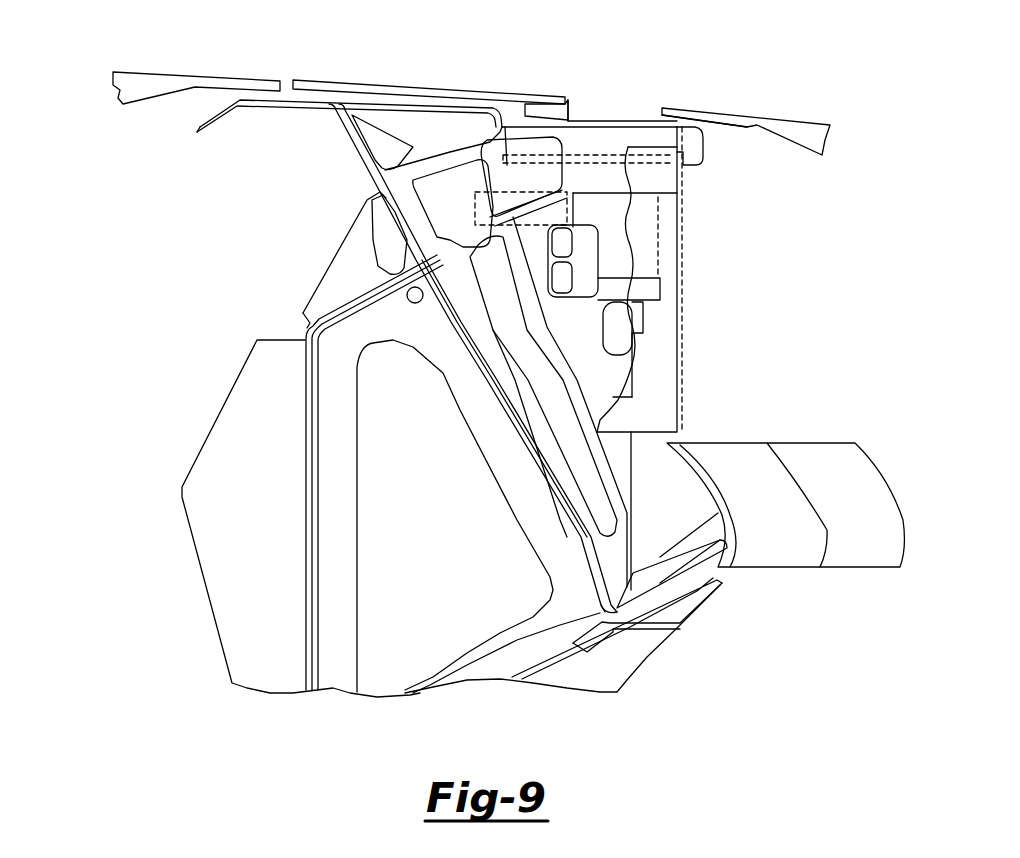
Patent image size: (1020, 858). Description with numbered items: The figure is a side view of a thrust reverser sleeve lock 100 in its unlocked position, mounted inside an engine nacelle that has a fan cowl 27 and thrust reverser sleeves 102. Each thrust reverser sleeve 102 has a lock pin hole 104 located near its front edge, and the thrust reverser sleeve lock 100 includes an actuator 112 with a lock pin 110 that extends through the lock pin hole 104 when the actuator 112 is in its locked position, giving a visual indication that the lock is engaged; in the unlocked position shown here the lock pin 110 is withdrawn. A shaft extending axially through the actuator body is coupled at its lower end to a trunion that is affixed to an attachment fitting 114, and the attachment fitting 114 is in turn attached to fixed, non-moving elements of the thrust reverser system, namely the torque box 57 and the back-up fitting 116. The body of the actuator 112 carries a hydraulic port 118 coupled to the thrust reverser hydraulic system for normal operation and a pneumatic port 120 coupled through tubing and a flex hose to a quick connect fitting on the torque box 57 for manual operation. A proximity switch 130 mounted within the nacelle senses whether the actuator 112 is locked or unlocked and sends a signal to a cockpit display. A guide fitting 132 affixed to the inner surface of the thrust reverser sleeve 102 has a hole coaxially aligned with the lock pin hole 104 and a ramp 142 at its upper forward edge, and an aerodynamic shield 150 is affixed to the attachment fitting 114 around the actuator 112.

The fan cowl 27 is at (113, 80).
The torque box 57 is at (303, 423).
The thrust reverser sleeve lock 100 is at (672, 85).
The thrust reverser sleeve 102 is at (370, 73).
The lock pin hole 104 is at (571, 100).
The lock pin 110 is at (637, 123).
The actuator 112 is at (547, 293).
The attachment fitting 114 is at (450, 150).
The back-up fitting 116 is at (310, 300).
The hydraulic port 118 is at (547, 233).
The pneumatic port 120 is at (547, 283).
The proximity switch 130 is at (513, 185).
The guide fitting 132 is at (703, 168).
The ramp 142 is at (523, 117).
The aerodynamic shield 150 is at (685, 370).